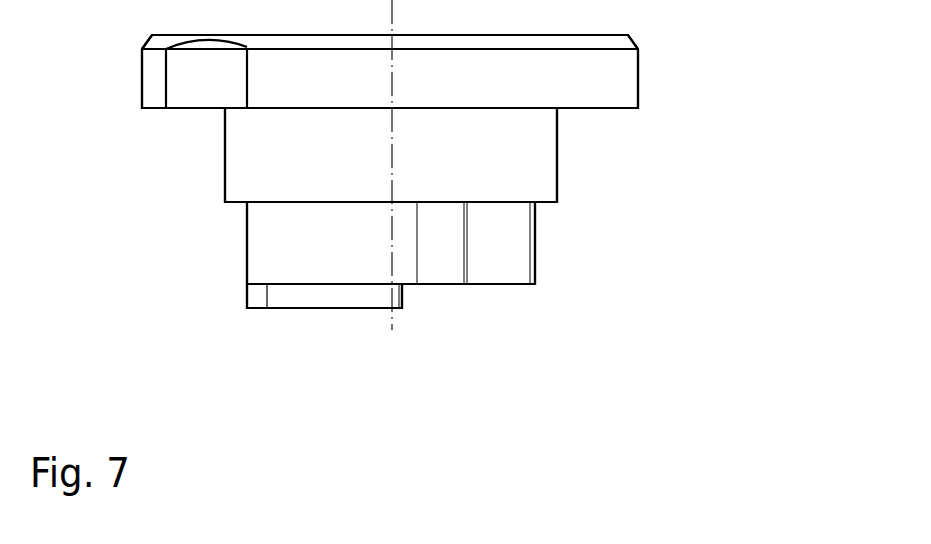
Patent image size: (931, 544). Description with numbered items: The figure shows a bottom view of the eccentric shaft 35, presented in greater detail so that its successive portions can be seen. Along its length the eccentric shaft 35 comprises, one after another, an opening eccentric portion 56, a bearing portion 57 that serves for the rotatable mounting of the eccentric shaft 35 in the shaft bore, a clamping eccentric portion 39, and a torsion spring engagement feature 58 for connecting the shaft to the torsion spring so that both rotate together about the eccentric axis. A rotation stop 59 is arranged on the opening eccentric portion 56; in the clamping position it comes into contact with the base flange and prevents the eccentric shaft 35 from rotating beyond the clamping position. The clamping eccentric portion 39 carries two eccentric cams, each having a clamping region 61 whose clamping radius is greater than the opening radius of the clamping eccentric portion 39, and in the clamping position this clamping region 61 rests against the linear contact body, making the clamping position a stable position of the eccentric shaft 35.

The eccentric shaft 35 is at (683, 100).
The opening eccentric portion 56 is at (613, 62).
The rotation stop 59 is at (183, 63).
The bearing portion 57 is at (540, 163).
The clamping eccentric portion 39 is at (267, 242).
The clamping region 61 is at (520, 244).
The torsion spring engagement feature 58 is at (283, 294).